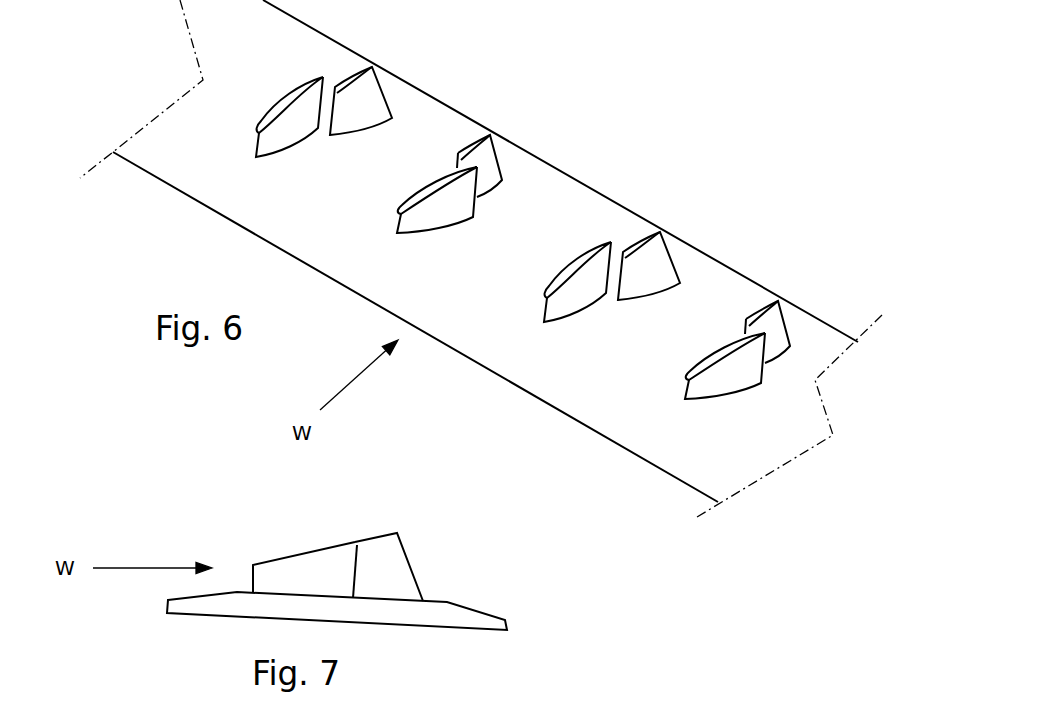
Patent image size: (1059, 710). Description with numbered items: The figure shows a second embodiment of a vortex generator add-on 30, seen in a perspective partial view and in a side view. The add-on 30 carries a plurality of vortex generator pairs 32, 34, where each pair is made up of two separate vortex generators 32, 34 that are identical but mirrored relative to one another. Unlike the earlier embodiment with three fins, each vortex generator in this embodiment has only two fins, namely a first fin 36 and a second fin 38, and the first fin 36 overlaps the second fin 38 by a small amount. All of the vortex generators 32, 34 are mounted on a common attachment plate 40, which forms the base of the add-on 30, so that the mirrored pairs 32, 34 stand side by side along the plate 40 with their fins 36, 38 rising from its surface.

In FIG. 6, the vortex generator add-on 30 is at (615, 87).
In FIG. 7, the vortex generator add-on 30 is at (193, 508).
In FIG. 6, the vortex generator 32 is at (803, 332).
In FIG. 7, the vortex generator 32 is at (357, 503).
In FIG. 6, the vortex generator 34 is at (603, 230).
In FIG. 6, the first fin 36 is at (410, 198).
In FIG. 7, the first fin 36 is at (322, 563).
In FIG. 6, the second fin 38 is at (483, 135).
In FIG. 7, the second fin 38 is at (382, 545).
In FIG. 6, the attachment plate 40 is at (710, 285).
In FIG. 7, the attachment plate 40 is at (483, 613).